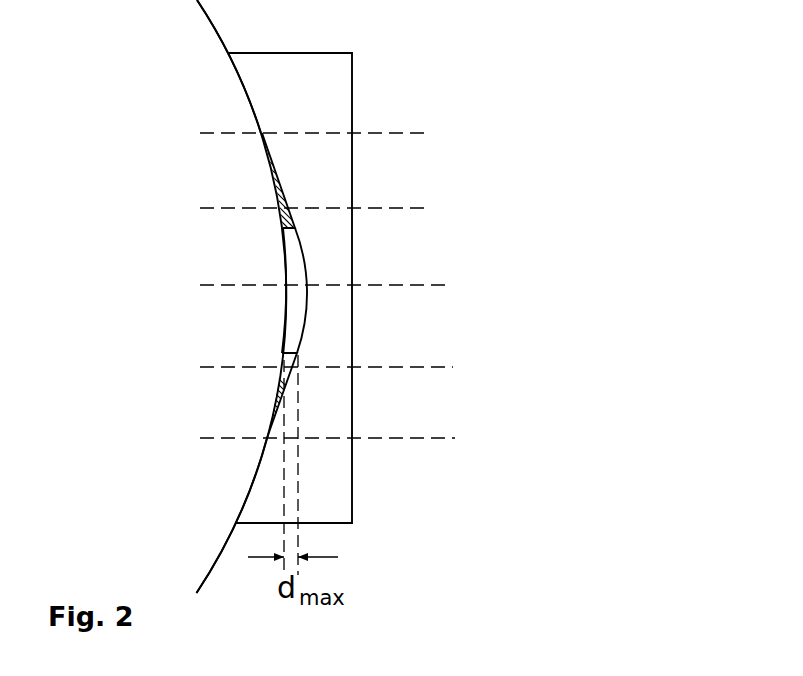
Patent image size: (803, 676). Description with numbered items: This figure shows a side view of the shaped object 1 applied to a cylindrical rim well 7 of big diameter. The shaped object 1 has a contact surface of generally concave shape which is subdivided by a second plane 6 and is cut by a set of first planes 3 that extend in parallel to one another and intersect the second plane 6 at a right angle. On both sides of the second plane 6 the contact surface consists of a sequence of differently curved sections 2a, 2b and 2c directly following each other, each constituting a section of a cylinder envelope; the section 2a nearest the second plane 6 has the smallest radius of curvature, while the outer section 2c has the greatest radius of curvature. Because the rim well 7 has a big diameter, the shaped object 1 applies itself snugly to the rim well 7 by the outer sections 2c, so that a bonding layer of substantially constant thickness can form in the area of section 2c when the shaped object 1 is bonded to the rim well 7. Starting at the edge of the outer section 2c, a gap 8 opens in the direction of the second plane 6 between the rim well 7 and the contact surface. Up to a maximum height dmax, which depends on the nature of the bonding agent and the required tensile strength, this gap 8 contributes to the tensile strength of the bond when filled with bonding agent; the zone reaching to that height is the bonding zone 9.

The shaped object 1 is at (315, 155).
The section of contact surface 2a is at (307, 265).
The section of contact surface 2b is at (283, 190).
The outer section of contact surface 2c is at (244, 93).
The first planes 3 is at (145, 436).
The second plane 6 is at (455, 285).
The rim well 7 is at (214, 24).
The gap 8 is at (297, 323).
The bonding zone 9 is at (297, 353).